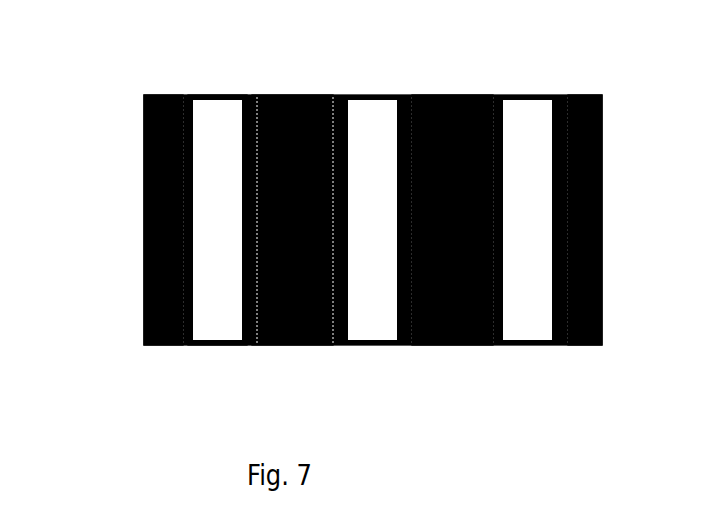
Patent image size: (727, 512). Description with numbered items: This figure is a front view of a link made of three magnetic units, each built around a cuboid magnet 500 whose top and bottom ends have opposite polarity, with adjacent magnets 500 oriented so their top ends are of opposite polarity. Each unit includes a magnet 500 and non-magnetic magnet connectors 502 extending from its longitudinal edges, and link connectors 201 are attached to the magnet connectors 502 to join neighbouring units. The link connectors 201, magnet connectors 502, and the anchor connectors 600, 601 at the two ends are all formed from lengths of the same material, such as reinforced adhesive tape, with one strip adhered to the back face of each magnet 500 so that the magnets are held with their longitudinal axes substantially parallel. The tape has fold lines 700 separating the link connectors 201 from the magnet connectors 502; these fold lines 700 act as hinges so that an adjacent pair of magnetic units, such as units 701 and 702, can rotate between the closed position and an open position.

The link connector 201 is at (372, 180).
The magnet 500 is at (211, 240).
The magnet connector 502 is at (144, 180).
The anchor connector 600 is at (600, 162).
The anchor connector 601 is at (157, 192).
The fold line 700 is at (295, 254).
The magnetic unit 701 is at (335, 352).
The magnetic unit 702 is at (487, 352).